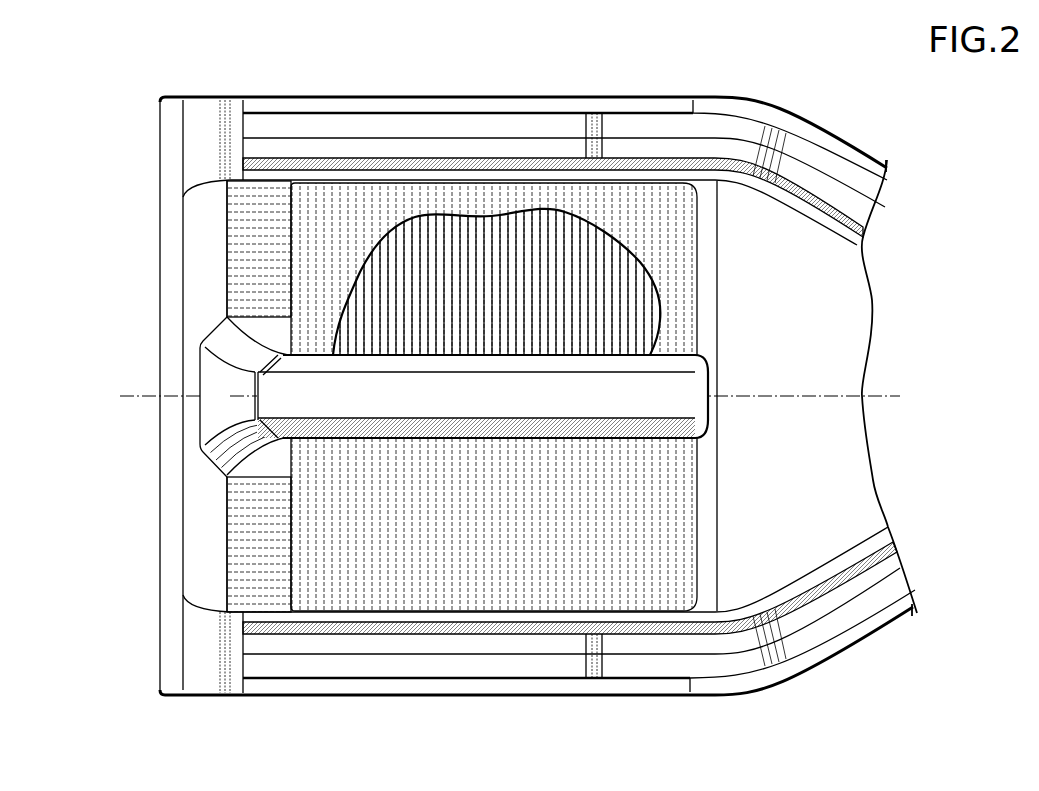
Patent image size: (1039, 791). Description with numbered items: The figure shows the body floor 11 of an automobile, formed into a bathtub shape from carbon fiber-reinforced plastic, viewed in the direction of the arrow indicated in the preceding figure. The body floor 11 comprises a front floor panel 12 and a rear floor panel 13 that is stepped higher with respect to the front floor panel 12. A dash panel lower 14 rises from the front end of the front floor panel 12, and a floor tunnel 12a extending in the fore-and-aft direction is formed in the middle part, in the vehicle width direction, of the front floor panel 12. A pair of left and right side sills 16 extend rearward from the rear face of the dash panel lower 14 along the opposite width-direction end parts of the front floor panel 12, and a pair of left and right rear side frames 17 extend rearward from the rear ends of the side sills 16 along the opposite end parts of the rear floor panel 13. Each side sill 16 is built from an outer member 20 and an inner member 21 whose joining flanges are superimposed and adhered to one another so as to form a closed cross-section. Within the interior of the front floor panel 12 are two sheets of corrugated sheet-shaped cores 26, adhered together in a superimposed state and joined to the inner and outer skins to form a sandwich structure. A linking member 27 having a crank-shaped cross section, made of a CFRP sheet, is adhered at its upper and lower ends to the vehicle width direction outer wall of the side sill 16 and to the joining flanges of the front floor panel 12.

The body floor 11 is at (636, 82).
The front floor panel 12 is at (345, 265).
The floor tunnel 12a is at (543, 410).
The rear floor panel 13 is at (797, 369).
The dash panel lower 14 is at (170, 294).
The side sill 16 is at (538, 57).
The rear side frame 17 is at (840, 175).
The outer member 20 is at (513, 122).
The inner member 21 is at (463, 150).
The corrugated sheet-shaped core 26 is at (512, 296).
The linking member 27 is at (344, 107).